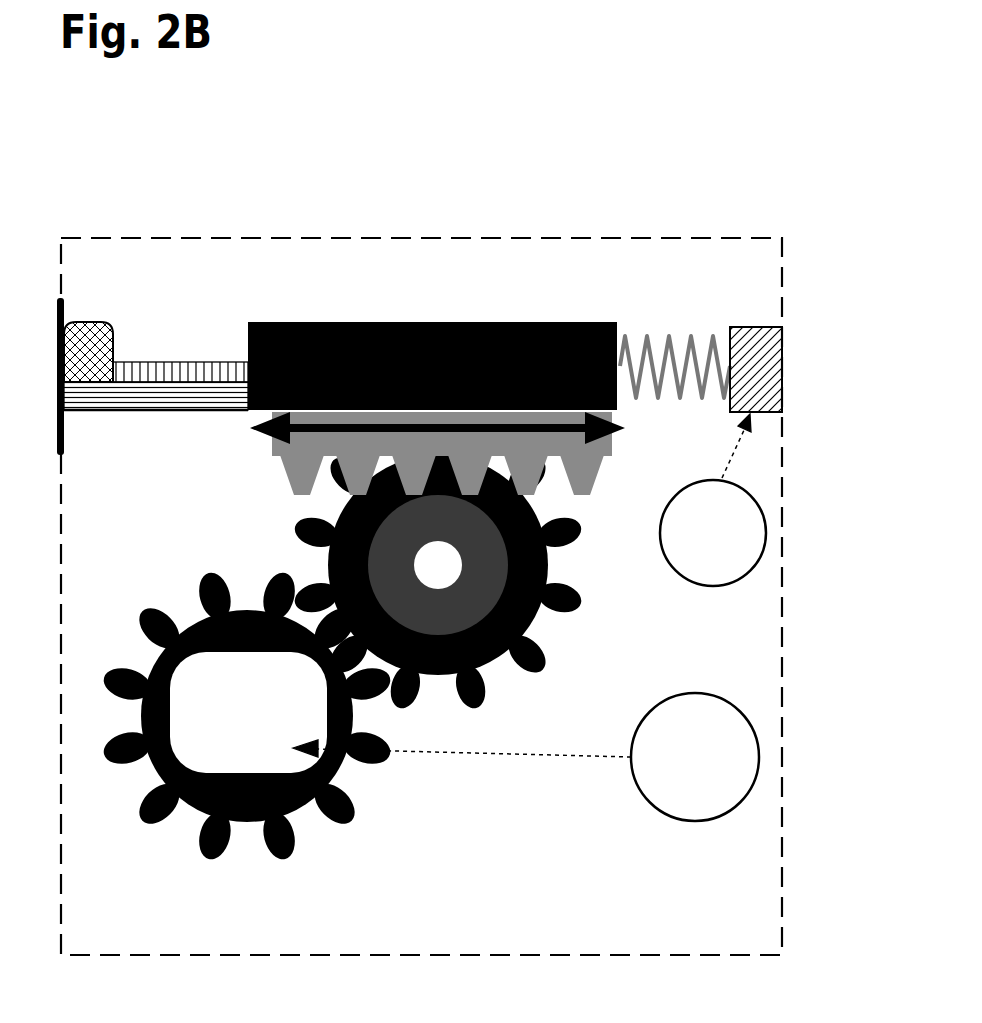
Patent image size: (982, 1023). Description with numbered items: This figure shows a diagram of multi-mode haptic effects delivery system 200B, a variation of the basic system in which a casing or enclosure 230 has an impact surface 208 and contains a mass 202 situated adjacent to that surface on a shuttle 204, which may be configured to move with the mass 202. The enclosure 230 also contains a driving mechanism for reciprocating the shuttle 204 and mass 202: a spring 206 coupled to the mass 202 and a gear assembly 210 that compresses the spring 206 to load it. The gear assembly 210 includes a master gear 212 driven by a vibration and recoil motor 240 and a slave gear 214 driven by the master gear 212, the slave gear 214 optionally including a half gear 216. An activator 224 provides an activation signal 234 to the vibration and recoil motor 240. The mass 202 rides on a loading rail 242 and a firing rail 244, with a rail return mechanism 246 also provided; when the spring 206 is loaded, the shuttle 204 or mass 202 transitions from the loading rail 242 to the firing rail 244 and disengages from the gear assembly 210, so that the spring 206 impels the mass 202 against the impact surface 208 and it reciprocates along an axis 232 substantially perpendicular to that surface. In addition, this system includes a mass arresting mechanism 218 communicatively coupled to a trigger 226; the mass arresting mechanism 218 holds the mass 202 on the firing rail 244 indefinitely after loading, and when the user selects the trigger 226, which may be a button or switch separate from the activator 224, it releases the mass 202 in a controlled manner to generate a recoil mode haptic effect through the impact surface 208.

The multi-mode haptic effects delivery system 200B is at (437, 536).
The casing or enclosure 230 is at (335, 238).
The mass 202 is at (432, 366).
The shuttle 204 is at (280, 462).
The spring 206 is at (683, 400).
The impact surface 208 is at (66, 432).
The gear assembly 210 is at (377, 660).
The master gear 212 is at (247, 735).
The slave gear 214 is at (473, 564).
The half gear 216 is at (535, 620).
The mass arresting mechanism 218 is at (742, 326).
The activator 224 is at (690, 822).
The trigger 226 is at (715, 587).
The axis 232 is at (615, 440).
The activation signal 234 is at (497, 760).
The vibration and recoil motor 240 is at (248, 712).
The loading rail 242 is at (200, 362).
The firing rail 244 is at (163, 411).
The rail return mechanism 246 is at (108, 326).